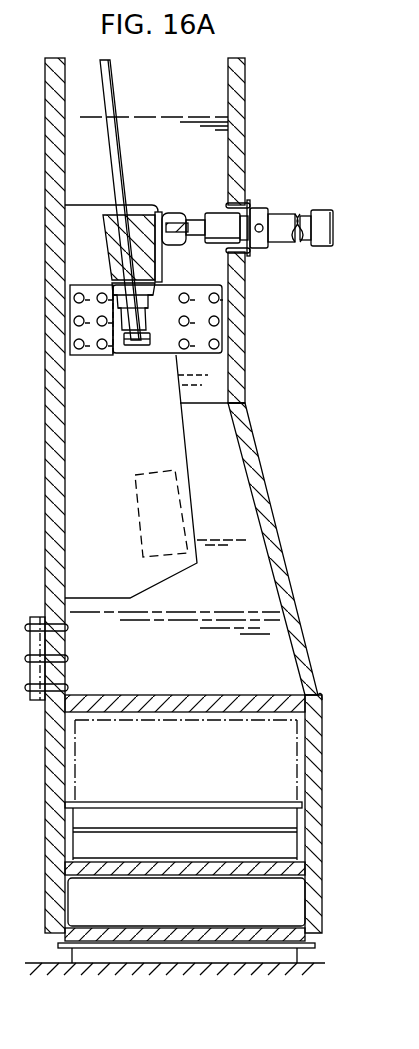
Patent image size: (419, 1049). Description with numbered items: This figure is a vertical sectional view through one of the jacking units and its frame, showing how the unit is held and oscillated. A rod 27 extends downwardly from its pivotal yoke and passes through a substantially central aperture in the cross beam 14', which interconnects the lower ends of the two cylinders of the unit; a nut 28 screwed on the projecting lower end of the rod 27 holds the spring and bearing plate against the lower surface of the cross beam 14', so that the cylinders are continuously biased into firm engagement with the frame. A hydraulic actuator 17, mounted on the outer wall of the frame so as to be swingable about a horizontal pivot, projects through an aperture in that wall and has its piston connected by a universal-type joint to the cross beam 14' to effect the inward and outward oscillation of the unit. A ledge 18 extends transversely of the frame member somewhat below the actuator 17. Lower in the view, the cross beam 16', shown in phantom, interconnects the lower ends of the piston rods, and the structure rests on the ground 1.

The ground / foundation 1 is at (38, 963).
The cross beam 14' is at (87, 247).
The cross beam 16' is at (225, 513).
The hydraulic actuator 17 is at (276, 215).
The ledge 18 is at (218, 313).
The rod 27 is at (110, 90).
The nut 28 is at (132, 348).